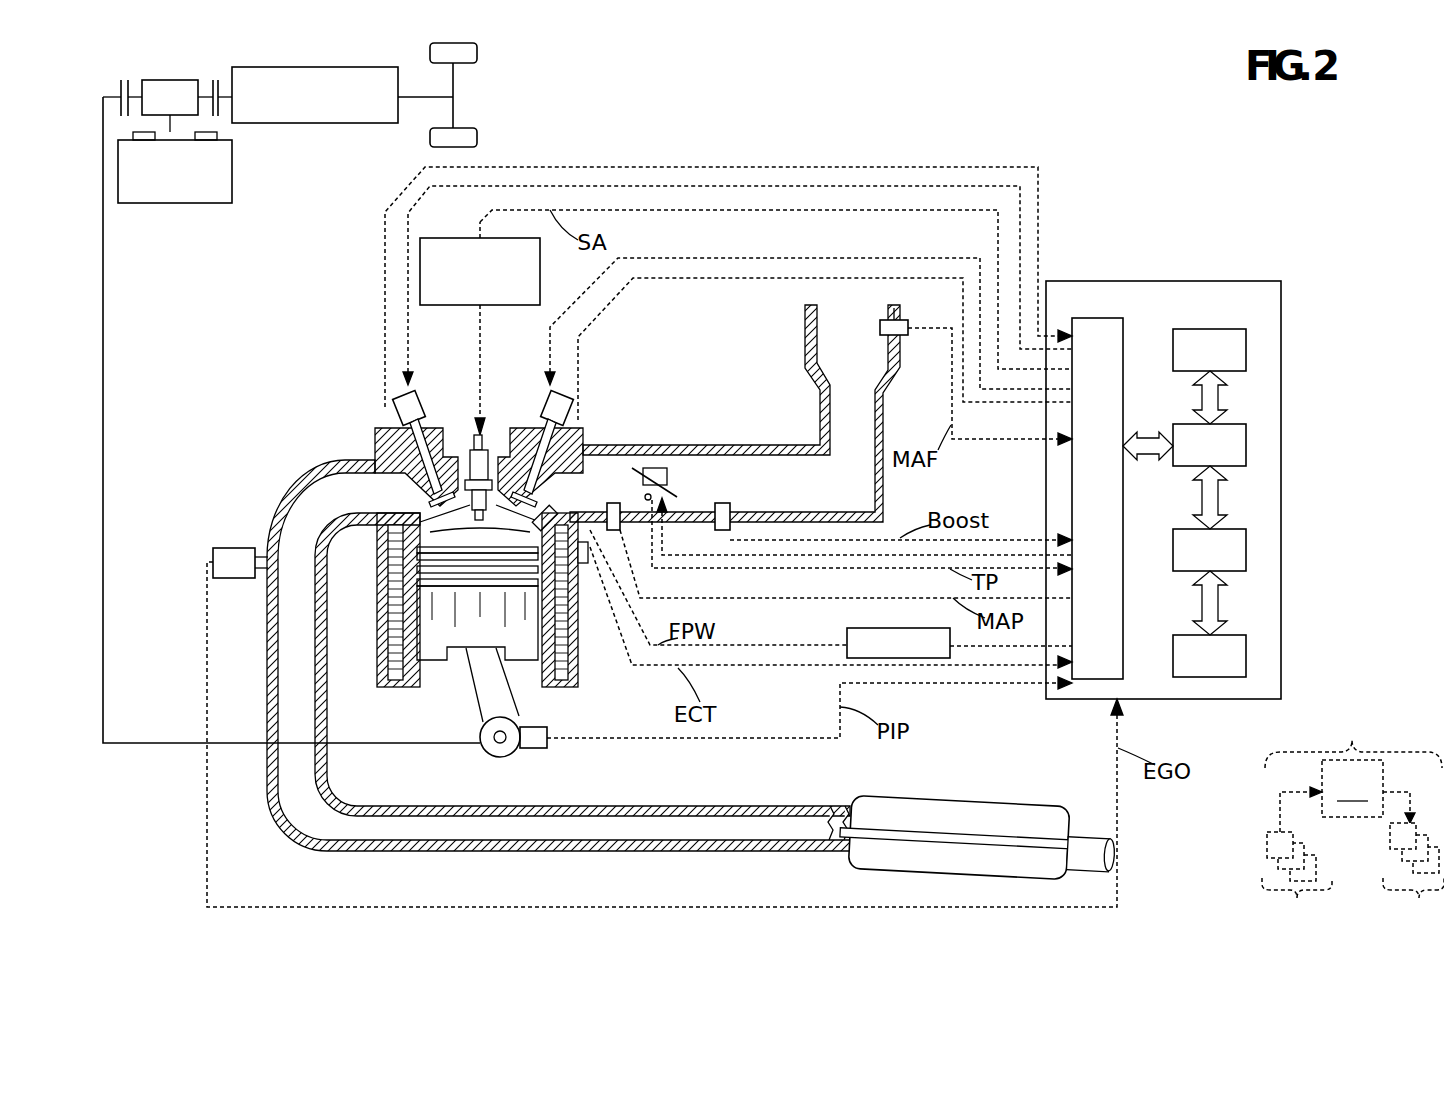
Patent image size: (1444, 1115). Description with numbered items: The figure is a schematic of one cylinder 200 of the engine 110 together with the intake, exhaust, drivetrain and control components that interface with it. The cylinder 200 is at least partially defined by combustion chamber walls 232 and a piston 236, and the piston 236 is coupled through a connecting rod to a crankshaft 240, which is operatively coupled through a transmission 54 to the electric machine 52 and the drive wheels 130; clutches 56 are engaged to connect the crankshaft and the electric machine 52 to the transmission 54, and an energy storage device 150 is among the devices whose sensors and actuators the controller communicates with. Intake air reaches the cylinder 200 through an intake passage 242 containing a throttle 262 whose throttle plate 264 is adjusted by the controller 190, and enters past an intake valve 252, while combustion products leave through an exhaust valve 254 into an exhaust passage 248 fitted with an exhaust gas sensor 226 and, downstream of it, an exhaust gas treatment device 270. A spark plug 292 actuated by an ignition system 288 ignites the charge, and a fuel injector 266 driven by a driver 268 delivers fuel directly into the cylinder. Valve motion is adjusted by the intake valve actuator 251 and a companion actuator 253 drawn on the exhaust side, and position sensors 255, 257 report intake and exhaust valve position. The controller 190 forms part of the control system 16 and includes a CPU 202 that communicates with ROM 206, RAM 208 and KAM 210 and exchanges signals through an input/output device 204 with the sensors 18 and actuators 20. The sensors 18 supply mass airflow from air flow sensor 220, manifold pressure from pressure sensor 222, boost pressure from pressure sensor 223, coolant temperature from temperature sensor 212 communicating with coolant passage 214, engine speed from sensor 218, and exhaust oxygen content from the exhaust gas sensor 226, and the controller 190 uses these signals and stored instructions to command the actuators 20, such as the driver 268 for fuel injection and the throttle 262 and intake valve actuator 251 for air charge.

The clutch 56 is at (121, 84).
The electric machine 52 is at (172, 80).
The transmission 54 is at (372, 123).
The drive wheel 130 is at (478, 140).
The energy storage device 150 is at (165, 203).
The ignition system 288 is at (428, 238).
The intake valve actuator signal 253 is at (426, 397).
The intake valve actuator 251 is at (530, 397).
The position sensor 255 is at (562, 408).
The position sensor 257 is at (393, 413).
The exhaust valve 254 is at (377, 457).
The intake valve 252 is at (492, 488).
The spark plug 292 is at (473, 462).
The engine 110 is at (303, 378).
The cylinder 200 is at (377, 553).
The fuel injector 266 is at (548, 512).
The exhaust passage 248 is at (328, 501).
The intake passage 242 is at (836, 356).
The air flow sensor 220 is at (905, 318).
The throttle 262 is at (663, 470).
The throttle plate 264 is at (648, 468).
The pressure sensor 223 is at (720, 515).
The pressure sensor 222 is at (620, 532).
The driver 268 is at (850, 630).
The exhaust gas sensor 226 is at (212, 552).
The combustion chamber walls 232 is at (422, 675).
The coolant passage 214 is at (562, 640).
The temperature sensor 212 is at (592, 565).
The piston 236 is at (460, 630).
The crankshaft 240 is at (487, 752).
The sensor 218 is at (540, 750).
The exhaust gas treatment device 270 is at (1027, 808).
The controller 190 is at (1268, 280).
The input/output device 204 is at (1127, 328).
The read-only memory 206 is at (1250, 348).
The processing subsystem 202 is at (1250, 440).
The random-access memory 208 is at (1250, 548).
The keep-alive memory 210 is at (1250, 655).
The control system 16 is at (1353, 764).
The sensors 18 is at (1297, 885).
The actuators 20 is at (1413, 880).